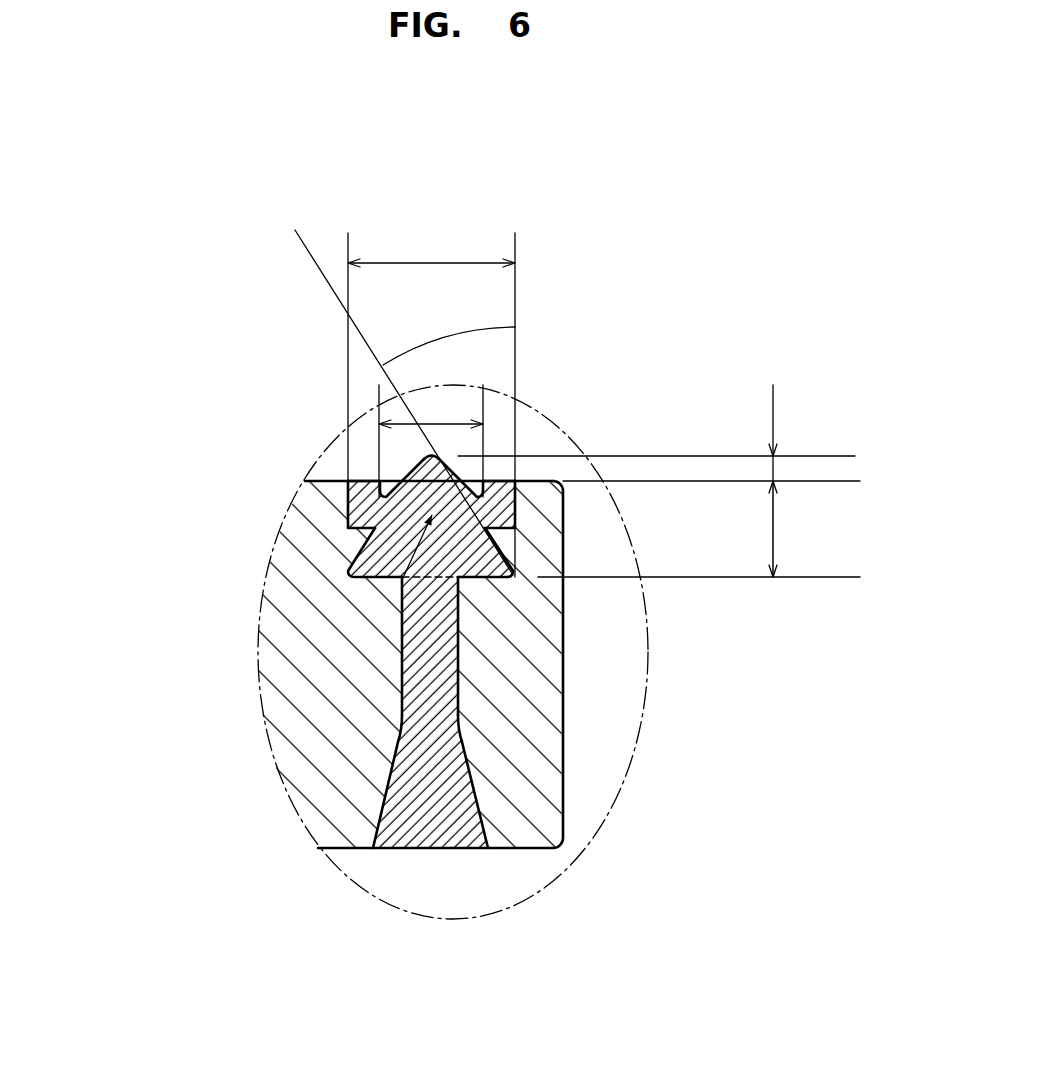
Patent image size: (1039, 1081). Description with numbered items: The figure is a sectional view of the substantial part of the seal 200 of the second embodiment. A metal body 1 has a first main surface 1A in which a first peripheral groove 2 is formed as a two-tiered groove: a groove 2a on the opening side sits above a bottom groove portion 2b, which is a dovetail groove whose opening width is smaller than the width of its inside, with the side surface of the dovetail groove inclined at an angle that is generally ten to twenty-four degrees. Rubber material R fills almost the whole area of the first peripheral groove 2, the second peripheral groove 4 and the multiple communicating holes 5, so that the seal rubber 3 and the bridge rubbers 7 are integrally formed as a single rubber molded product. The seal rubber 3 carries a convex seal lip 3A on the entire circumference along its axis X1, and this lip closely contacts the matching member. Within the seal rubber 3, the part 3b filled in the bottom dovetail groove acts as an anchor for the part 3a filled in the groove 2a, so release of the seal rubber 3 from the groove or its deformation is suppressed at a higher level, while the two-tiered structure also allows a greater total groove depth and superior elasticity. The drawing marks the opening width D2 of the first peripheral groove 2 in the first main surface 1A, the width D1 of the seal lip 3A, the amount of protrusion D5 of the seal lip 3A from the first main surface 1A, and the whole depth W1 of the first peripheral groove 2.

The metal body 1 is at (600, 768).
The first main surface of the metal body 1A is at (328, 481).
The first peripheral groove 2 is at (269, 529).
The groove on the opening side 2a is at (348, 508).
The bottom groove portion 2b is at (353, 557).
The seal rubber 3 is at (537, 598).
The convex seal lip 3A is at (457, 482).
The part of seal rubber filled in the opening-side groove 3a is at (517, 512).
The part of seal rubber filled in the bottom dovetail groove 3b is at (517, 555).
The second peripheral groove 4 is at (378, 813).
The communicating holes 5 is at (402, 685).
The bridge rubbers 7 is at (460, 690).
The seal 200 is at (642, 322).
The rubber material R is at (440, 647).
The axis X1 is at (400, 583).
The width of the seal lip D1 is at (431, 441).
The opening width of the first peripheral groove D2 is at (431, 405).
The amount of protrusion of the seal lip D5 is at (773, 467).
The whole depth of the first peripheral groove W1 is at (699, 529).